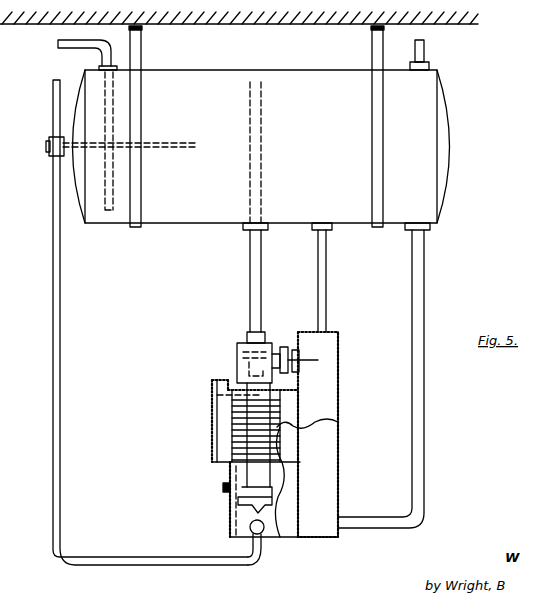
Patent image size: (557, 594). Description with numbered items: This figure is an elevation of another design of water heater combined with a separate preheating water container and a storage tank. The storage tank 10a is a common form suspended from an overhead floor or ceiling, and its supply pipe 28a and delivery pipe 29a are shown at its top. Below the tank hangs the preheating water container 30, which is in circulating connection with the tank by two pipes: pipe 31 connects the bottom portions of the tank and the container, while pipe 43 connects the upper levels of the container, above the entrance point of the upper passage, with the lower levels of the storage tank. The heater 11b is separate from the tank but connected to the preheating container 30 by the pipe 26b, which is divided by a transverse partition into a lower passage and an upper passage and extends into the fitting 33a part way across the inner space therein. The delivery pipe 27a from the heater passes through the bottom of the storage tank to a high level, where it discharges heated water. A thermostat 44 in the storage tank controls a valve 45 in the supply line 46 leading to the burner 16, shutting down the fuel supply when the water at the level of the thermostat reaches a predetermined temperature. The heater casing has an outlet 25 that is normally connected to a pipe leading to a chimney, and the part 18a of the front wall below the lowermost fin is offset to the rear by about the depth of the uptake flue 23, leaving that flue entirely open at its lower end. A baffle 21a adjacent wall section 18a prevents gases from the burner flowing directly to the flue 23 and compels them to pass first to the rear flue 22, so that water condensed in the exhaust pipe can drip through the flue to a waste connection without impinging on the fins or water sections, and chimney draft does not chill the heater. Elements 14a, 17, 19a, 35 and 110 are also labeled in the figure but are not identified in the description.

The storage tank 10a is at (195, 202).
The heater 11b is at (215, 429).
The plunger 14a is at (260, 480).
The burner 16 is at (262, 536).
The heating element 17 is at (232, 416).
The front wall section of casing 18a is at (229, 507).
The partition 19a is at (216, 396).
The baffle 21a is at (223, 488).
The rear flue 22 is at (288, 421).
The uptake flue 23 is at (223, 440).
The outlet 25 is at (218, 380).
The pipe 26b is at (282, 348).
The delivery pipe 27a is at (252, 269).
The supply pipe 28a is at (70, 52).
The delivery pipe 29a is at (425, 52).
The preheating water container 30 is at (340, 385).
The pipe 31 is at (422, 332).
The fitting 33a is at (240, 354).
The partition wall 35 is at (297, 414).
The pipe 43 is at (330, 272).
The thermostat 44 is at (172, 143).
The valve 45 is at (50, 158).
The supply line 46 is at (52, 503).
The housing 110 is at (290, 503).